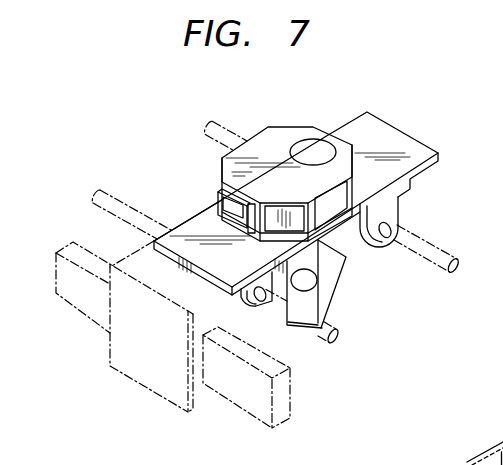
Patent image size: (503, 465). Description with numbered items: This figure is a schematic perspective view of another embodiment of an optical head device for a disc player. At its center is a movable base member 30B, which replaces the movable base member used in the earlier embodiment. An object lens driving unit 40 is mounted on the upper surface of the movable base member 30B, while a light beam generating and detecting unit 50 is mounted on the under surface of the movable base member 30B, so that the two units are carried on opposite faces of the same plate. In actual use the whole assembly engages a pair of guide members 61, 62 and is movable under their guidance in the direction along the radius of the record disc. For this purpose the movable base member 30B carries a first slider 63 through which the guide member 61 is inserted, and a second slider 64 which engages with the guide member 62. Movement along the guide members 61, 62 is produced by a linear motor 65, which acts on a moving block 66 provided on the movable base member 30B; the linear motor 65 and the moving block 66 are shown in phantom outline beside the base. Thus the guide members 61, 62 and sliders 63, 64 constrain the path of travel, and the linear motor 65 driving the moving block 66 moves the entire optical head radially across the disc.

The movable base member 30B is at (397, 142).
The object lens driving unit 40 is at (278, 137).
The light beam generating and detecting unit 50 is at (335, 273).
The guide member 61 is at (443, 242).
The guide member 62 is at (328, 341).
The first slider 63 is at (395, 214).
The second slider 64 is at (255, 306).
The linear motor 65 is at (235, 408).
The moving block 66 is at (138, 384).